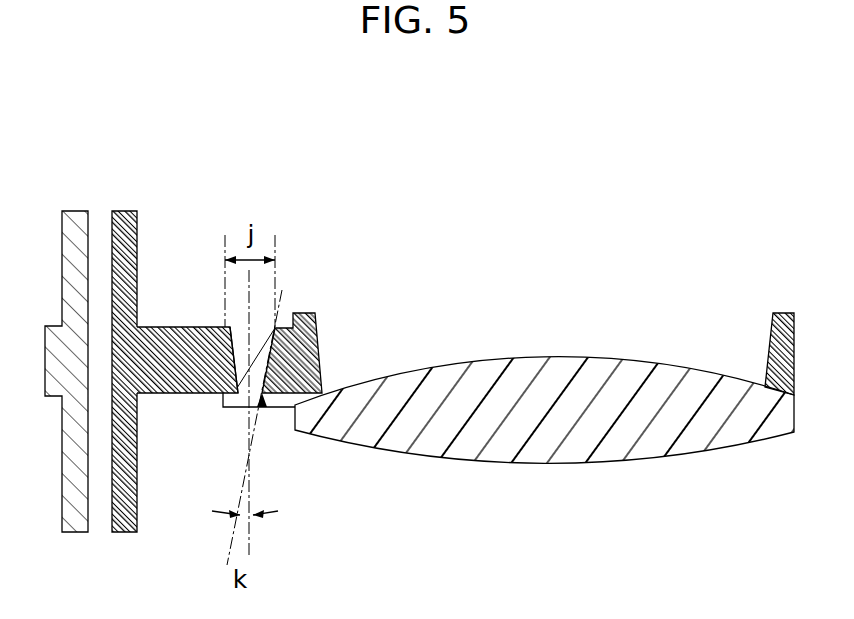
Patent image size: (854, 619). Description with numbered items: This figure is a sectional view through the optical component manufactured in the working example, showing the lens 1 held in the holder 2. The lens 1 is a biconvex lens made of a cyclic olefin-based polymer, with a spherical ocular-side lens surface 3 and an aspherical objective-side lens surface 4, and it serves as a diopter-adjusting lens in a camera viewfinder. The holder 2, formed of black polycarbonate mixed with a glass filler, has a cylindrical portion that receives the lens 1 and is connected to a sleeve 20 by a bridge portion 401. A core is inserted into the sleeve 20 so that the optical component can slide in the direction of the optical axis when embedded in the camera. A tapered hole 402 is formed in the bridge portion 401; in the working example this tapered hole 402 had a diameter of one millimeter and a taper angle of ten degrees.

The lens 1 is at (544, 371).
The holder 2 is at (312, 346).
The ocular-side lens surface 3 is at (601, 359).
The objective-side lens surface 4 is at (453, 380).
The sleeve 20 is at (78, 227).
The bridge portion 401 is at (163, 327).
The tapered hole 402 is at (238, 350).